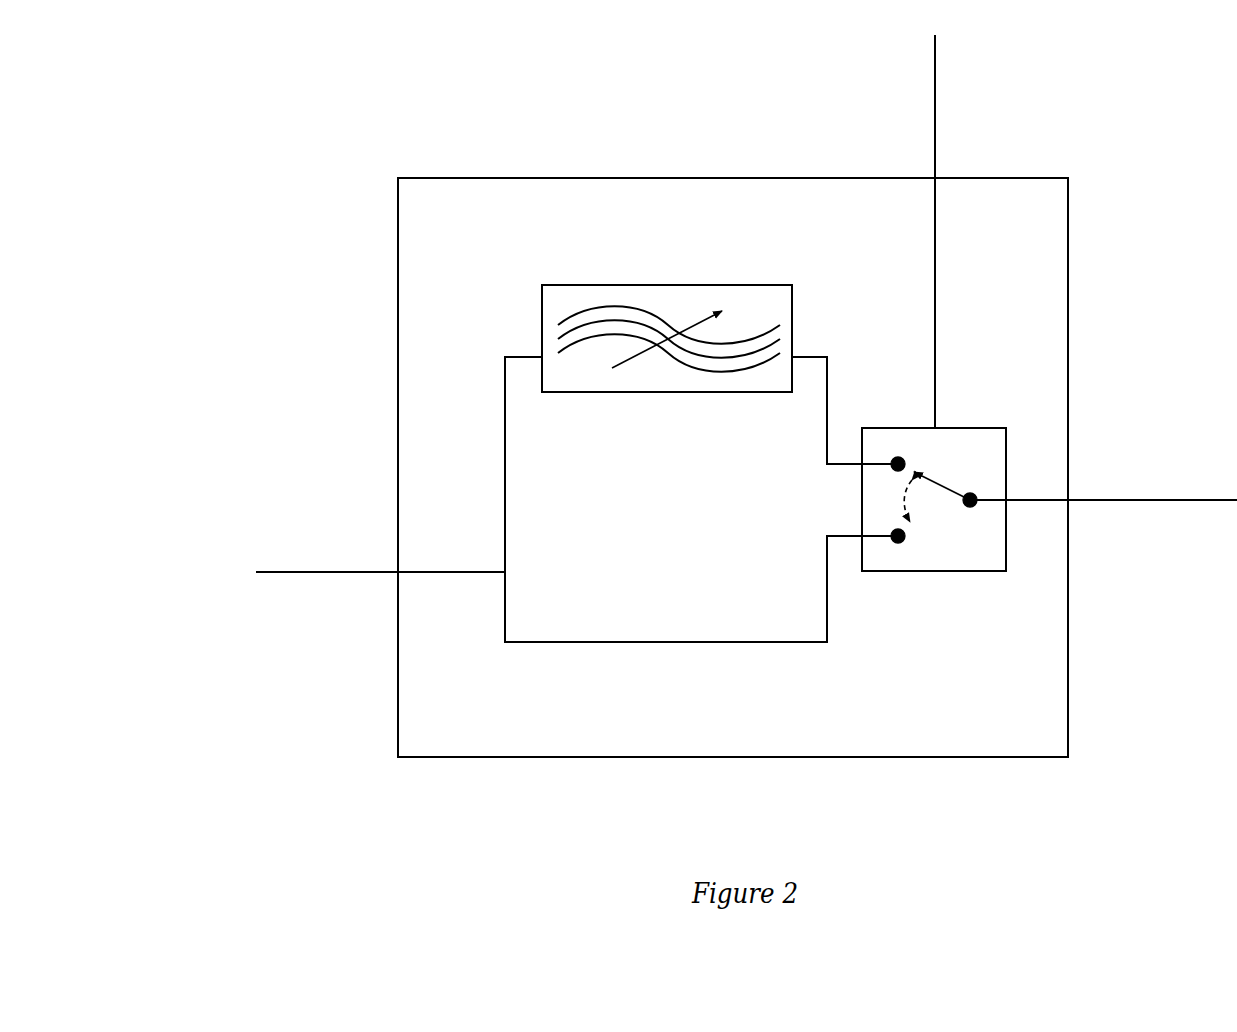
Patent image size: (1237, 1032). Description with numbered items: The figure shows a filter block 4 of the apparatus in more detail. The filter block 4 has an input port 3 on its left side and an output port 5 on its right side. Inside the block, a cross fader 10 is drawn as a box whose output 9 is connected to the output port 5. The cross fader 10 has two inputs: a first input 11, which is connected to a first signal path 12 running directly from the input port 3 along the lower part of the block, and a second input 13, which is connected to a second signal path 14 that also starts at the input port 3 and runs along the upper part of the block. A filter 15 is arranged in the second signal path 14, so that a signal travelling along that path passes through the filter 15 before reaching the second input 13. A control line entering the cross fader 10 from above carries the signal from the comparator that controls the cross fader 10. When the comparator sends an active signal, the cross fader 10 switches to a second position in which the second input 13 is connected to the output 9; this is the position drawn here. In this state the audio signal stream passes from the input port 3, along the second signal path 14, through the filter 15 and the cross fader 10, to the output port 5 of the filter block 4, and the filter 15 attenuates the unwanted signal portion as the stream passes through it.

The input port 3 is at (387, 583).
The filter block 4 is at (298, 283).
The output port 5 is at (1080, 513).
The output 9 is at (1013, 513).
The cross fader 10 is at (965, 443).
The first input 11 is at (852, 553).
The first signal path 12 is at (732, 664).
The second input 13 is at (847, 453).
The second signal path 14 is at (466, 345).
The filter 15 is at (587, 295).